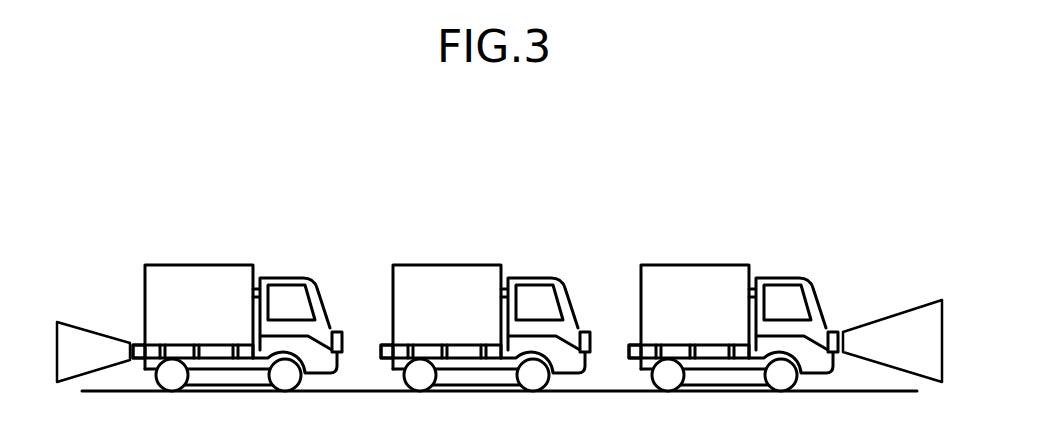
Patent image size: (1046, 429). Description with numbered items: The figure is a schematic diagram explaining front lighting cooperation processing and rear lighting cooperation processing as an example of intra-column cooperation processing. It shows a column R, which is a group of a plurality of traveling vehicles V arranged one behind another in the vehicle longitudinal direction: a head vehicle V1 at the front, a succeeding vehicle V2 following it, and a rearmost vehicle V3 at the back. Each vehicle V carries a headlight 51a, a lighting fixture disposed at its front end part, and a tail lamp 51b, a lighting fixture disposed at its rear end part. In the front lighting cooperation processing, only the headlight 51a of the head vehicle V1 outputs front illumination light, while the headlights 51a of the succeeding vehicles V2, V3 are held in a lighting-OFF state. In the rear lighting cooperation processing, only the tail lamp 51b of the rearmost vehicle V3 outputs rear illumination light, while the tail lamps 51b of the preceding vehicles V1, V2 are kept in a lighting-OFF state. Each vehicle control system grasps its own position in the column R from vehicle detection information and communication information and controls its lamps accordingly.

The column R is at (349, 160).
The vehicle V is at (492, 313).
The head vehicle V1 is at (700, 262).
The succeeding vehicle V2 is at (452, 262).
The rearmost vehicle V3 is at (204, 262).
The headlight 51a is at (338, 332).
The tail lamp 51b is at (140, 361).